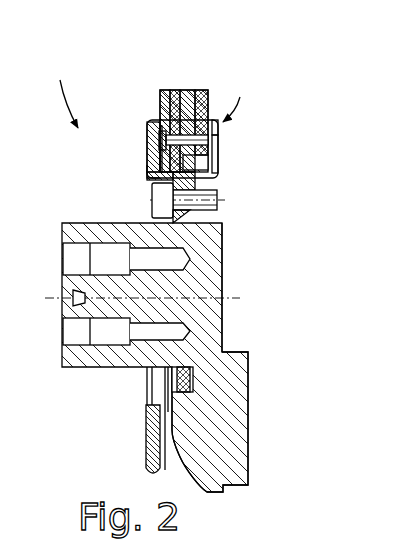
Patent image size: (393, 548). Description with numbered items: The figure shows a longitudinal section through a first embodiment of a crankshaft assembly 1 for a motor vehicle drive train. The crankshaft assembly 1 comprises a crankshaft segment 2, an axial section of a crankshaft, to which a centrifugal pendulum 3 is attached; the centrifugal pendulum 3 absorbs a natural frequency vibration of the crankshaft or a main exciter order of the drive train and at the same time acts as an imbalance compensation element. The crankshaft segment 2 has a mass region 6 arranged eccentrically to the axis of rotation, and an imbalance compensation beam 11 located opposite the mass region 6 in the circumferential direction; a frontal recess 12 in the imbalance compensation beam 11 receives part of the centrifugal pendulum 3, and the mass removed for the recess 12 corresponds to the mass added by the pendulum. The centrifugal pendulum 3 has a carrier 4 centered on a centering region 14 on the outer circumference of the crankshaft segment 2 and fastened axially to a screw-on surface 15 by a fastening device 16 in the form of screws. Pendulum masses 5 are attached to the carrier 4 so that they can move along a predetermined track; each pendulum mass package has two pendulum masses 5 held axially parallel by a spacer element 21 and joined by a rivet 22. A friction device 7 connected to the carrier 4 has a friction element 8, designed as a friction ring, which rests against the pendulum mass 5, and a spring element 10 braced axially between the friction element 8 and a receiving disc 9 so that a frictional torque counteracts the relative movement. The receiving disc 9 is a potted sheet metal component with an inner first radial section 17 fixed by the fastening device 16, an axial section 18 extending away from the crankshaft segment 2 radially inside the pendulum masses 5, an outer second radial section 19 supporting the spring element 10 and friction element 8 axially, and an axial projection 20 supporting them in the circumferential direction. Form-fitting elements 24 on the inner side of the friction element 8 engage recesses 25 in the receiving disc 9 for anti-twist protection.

The crankshaft assembly 1 is at (64, 93).
The crankshaft segment 2 is at (228, 296).
The centrifugal pendulum 3 is at (73, 293).
The carrier 4 is at (222, 155).
The pendulum mass 5 is at (176, 88).
The mass region 6 is at (205, 438).
The friction device 7 is at (165, 88).
The friction element 8 is at (149, 168).
The receiving disc 9 is at (148, 128).
The spring element 10 is at (148, 152).
The imbalance compensation beam 11 is at (222, 142).
The frontal recess 12 is at (225, 132).
The centering region 14 is at (222, 245).
The screw-on surface 15 is at (215, 198).
The fastening device 16 is at (218, 212).
The first radial section 17 is at (217, 178).
The axial section 18 is at (152, 178).
The second radial section 19 is at (147, 140).
The axial projection 20 is at (161, 100).
The spacer element 21 is at (190, 88).
The rivet 22 is at (231, 100).
The form-fitting element 24 is at (158, 412).
The recess 25 is at (152, 400).